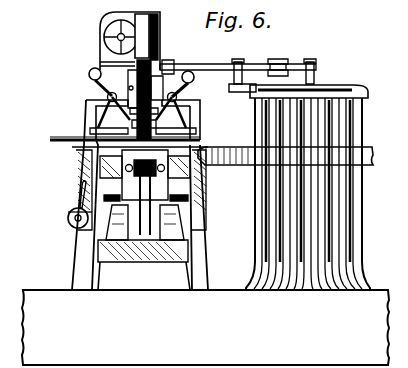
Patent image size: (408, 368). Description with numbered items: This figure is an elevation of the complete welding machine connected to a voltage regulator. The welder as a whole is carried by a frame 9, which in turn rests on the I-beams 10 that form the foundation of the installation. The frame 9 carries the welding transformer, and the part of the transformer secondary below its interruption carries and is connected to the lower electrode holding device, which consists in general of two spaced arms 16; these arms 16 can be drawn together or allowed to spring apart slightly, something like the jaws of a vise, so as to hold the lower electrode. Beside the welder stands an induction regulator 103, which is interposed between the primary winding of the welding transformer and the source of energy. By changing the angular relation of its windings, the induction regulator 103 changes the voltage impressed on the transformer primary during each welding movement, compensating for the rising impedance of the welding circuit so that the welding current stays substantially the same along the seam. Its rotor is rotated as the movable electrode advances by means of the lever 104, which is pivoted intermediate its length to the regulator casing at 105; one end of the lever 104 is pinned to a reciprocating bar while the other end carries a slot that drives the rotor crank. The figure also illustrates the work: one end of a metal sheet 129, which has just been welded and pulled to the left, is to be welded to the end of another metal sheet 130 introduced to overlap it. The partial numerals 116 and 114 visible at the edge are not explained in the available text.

The frame 9 is at (174, 264).
The I-beams 10 is at (48, 290).
The spaced arms 16 is at (127, 162).
The induction regulator 103 is at (352, 123).
The lever 104 is at (200, 64).
The pivot on regulator casing 105 is at (237, 64).
The metal sheet 129 is at (66, 141).
The metal sheet 130 is at (207, 146).
The part 116 is at (401, 242).
The part 114 is at (401, 260).